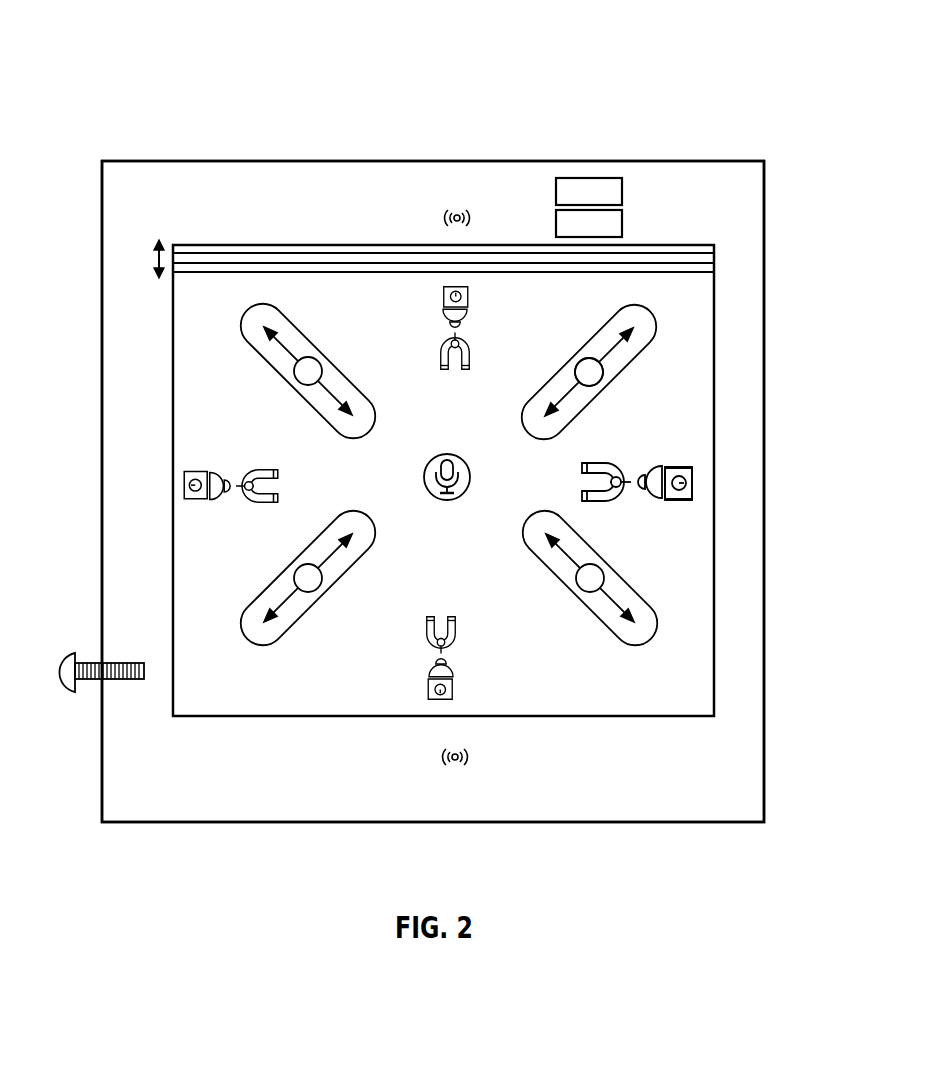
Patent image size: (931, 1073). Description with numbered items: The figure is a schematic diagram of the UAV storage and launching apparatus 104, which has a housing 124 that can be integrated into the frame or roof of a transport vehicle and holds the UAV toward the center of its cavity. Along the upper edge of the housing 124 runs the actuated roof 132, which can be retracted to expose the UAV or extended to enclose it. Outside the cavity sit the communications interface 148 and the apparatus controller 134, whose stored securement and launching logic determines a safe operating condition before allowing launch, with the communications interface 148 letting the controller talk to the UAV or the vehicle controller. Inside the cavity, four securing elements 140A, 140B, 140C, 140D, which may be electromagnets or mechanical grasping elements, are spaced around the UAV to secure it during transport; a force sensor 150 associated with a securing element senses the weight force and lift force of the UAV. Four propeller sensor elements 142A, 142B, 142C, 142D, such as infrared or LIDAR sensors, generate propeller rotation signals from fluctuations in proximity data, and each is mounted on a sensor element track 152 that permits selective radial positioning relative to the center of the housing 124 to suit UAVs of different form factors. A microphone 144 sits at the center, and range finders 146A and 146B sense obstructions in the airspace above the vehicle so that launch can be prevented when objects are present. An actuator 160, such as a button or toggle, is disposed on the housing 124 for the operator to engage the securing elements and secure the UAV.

The UAV storage and launching apparatus 104 is at (148, 94).
The housing 124 is at (173, 161).
The actuated roof 132 is at (314, 264).
The apparatus controller 134 is at (622, 224).
The securing element 140A is at (478, 321).
The securing element 140B is at (676, 447).
The securing element 140C is at (424, 666).
The securing element 140D is at (287, 489).
The propeller sensor element 142A is at (578, 366).
The propeller sensor element 142B is at (598, 566).
The propeller sensor element 142C is at (300, 566).
The propeller sensor element 142D is at (300, 388).
The microphone 144 is at (441, 500).
The range finder 146A is at (457, 206).
The range finder 146B is at (455, 767).
The communications interface 148 is at (590, 178).
The force sensor 150 is at (697, 483).
The sensor element track 152 is at (597, 398).
The actuator 160 is at (90, 663).